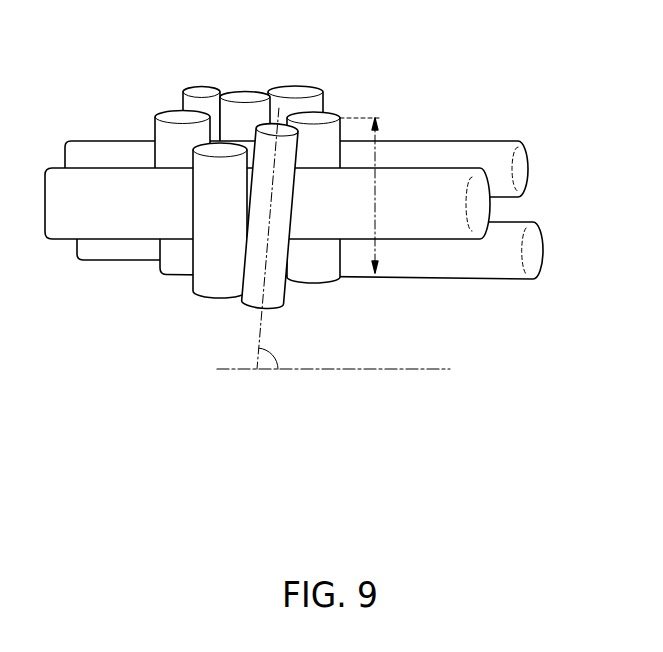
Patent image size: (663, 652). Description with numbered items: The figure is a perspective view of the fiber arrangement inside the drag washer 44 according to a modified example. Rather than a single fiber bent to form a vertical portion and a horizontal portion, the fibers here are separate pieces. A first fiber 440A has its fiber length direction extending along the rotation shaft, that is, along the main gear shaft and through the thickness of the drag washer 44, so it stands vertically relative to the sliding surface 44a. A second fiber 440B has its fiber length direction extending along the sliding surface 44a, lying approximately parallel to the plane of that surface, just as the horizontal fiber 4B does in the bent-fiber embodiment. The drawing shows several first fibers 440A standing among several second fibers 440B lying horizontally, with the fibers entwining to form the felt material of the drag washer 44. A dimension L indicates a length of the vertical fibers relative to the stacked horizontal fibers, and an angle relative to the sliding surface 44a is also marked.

The drag washer 44 is at (296, 201).
The horizontal fiber 4B is at (462, 141).
The first fiber 440A is at (332, 148).
The second fiber 440B is at (443, 217).
The length of protruding end portion L is at (376, 200).
The sliding surface 44a is at (372, 370).